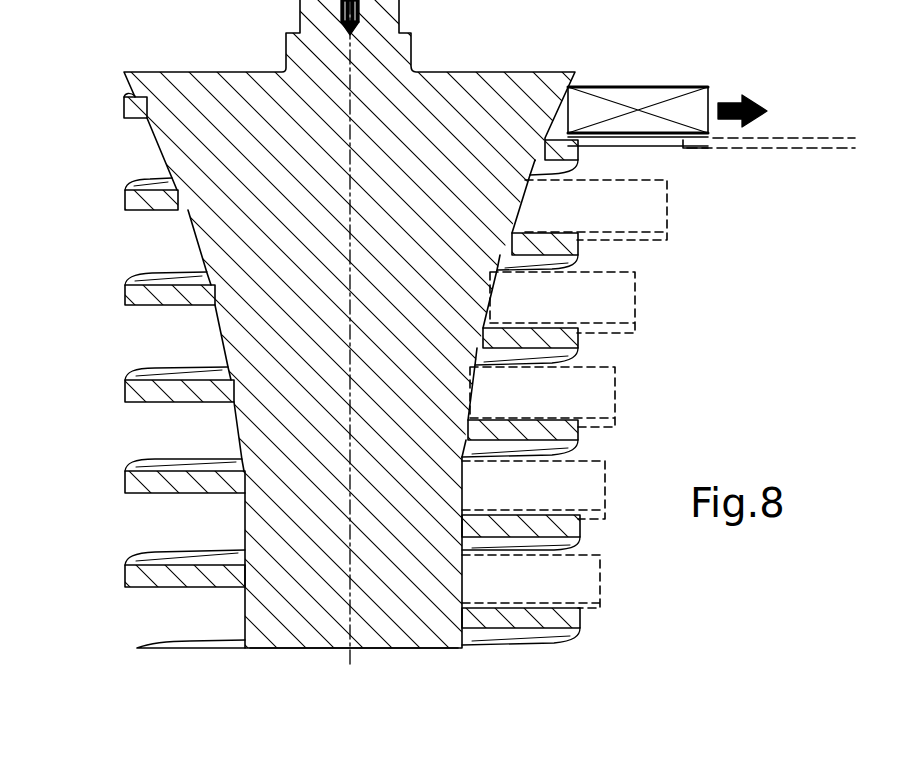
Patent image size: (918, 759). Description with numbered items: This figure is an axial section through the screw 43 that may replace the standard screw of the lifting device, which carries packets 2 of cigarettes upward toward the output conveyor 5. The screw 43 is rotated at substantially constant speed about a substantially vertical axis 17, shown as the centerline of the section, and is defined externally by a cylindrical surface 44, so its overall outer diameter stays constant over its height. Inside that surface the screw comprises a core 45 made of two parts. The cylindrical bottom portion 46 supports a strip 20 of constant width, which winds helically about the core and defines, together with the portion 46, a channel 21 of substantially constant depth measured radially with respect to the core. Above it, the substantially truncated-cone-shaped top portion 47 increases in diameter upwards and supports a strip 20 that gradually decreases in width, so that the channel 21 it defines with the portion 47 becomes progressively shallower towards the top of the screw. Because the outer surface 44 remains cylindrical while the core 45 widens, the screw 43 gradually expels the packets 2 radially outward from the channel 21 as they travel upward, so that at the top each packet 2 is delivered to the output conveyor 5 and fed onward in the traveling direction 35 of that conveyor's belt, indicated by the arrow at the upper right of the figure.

The packet 2 is at (638, 100).
The output conveyor 5 is at (793, 154).
The axis 17 is at (355, 653).
The strip 20 is at (523, 618).
The helical channel 21 is at (150, 590).
The traveling direction 35 is at (730, 100).
The screw 43 is at (104, 493).
The cylindrical surface 44 is at (123, 388).
The core 45 is at (313, 652).
The cylindrical bottom portion 46 is at (410, 583).
The truncated-cone-shaped top portion 47 is at (243, 100).